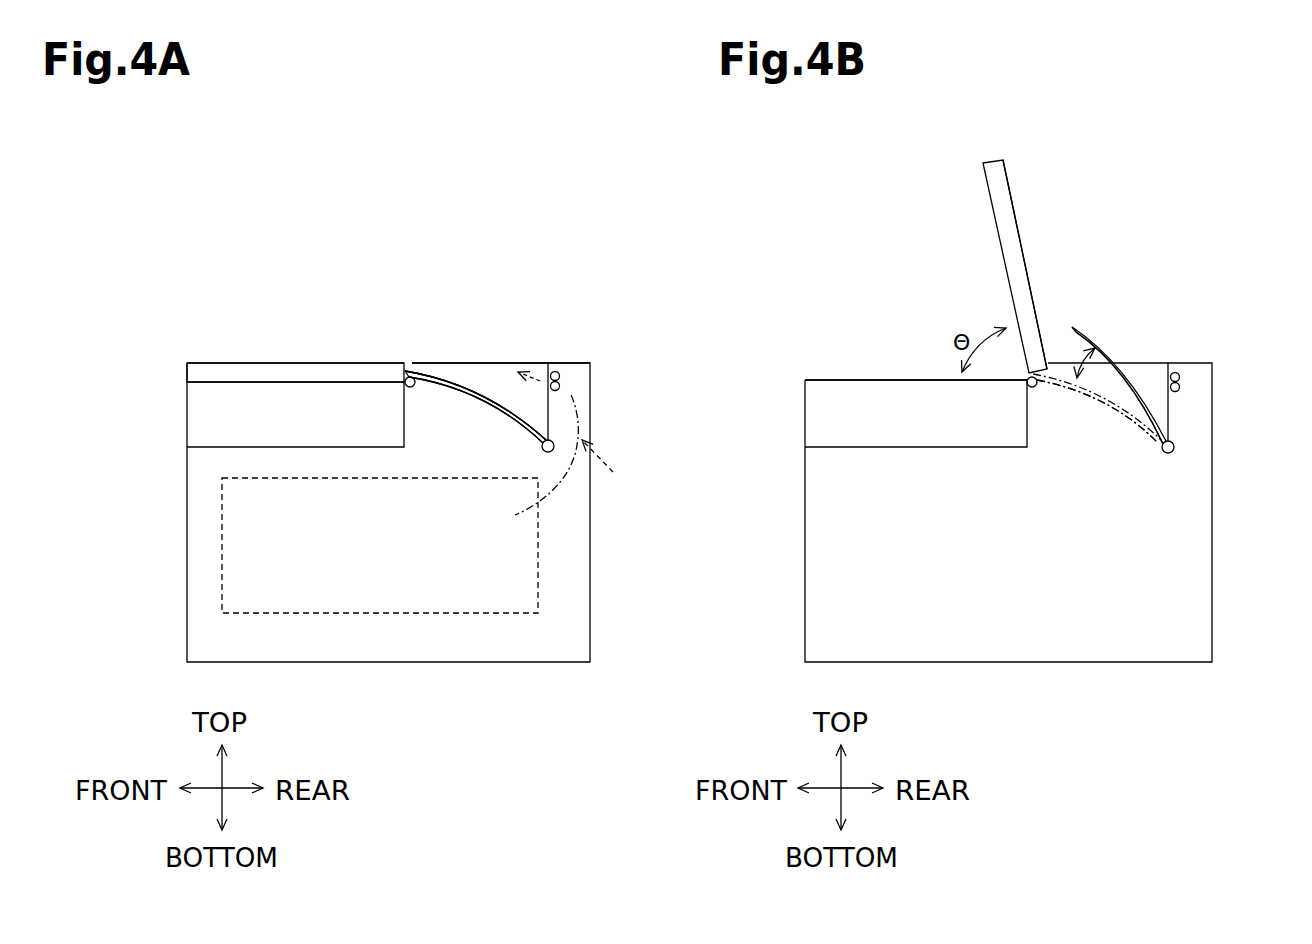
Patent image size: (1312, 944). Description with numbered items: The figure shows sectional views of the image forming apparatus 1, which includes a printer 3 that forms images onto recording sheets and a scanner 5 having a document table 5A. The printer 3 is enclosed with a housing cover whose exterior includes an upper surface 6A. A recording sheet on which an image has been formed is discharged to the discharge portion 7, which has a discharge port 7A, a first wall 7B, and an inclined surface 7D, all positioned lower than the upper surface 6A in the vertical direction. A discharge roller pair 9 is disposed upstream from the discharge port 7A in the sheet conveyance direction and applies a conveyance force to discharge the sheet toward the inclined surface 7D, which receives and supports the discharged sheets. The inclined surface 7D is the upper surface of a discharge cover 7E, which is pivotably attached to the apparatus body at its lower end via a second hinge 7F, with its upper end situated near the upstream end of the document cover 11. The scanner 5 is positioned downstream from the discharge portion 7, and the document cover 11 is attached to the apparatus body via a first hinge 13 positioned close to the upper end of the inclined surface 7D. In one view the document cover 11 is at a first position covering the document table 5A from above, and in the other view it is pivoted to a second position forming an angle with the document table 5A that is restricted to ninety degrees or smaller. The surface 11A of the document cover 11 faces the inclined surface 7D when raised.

In FIG. 4A, the image forming apparatus 1 is at (335, 317).
In FIG. 4A, the printer 3 is at (378, 614).
In FIG. 4A, the scanner 5 is at (183, 417).
In FIG. 4B, the scanner 5 is at (815, 380).
In FIG. 4B, the document table 5A is at (892, 380).
In FIG. 4A, the upper surface 6A is at (565, 363).
In FIG. 4A, the discharge portion 7 is at (508, 393).
In FIG. 4A, the discharge port 7A is at (535, 363).
In FIG. 4A, the first wall 7B is at (550, 411).
In FIG. 4B, the first wall 7B is at (1162, 402).
In FIG. 4A, the inclined surface 7D is at (477, 377).
In FIG. 4B, the inclined surface 7D is at (1103, 347).
In FIG. 4A, the discharge cover 7E is at (455, 375).
In FIG. 4B, the discharge cover 7E is at (1147, 410).
In FIG. 4A, the second hinge 7F is at (541, 449).
In FIG. 4B, the second hinge 7F is at (1174, 449).
In FIG. 4A, the discharge roller pair 9 is at (560, 376).
In FIG. 4B, the discharge roller pair 9 is at (1180, 376).
In FIG. 4A, the document cover 11 is at (250, 362).
In FIG. 4B, the document cover 11 is at (1017, 215).
In FIG. 4A, the surface of cover 11A is at (347, 363).
In FIG. 4B, the surface of cover 11A is at (1027, 263).
In FIG. 4A, the first hinge 13 is at (414, 387).